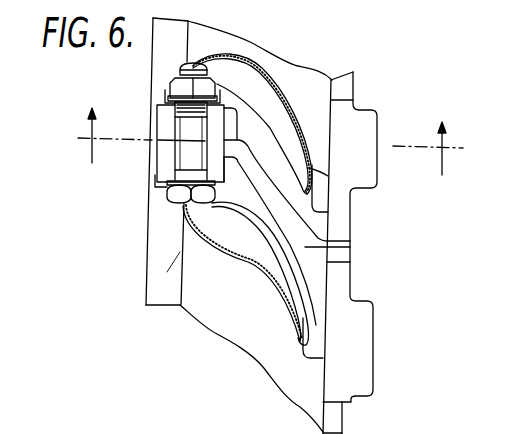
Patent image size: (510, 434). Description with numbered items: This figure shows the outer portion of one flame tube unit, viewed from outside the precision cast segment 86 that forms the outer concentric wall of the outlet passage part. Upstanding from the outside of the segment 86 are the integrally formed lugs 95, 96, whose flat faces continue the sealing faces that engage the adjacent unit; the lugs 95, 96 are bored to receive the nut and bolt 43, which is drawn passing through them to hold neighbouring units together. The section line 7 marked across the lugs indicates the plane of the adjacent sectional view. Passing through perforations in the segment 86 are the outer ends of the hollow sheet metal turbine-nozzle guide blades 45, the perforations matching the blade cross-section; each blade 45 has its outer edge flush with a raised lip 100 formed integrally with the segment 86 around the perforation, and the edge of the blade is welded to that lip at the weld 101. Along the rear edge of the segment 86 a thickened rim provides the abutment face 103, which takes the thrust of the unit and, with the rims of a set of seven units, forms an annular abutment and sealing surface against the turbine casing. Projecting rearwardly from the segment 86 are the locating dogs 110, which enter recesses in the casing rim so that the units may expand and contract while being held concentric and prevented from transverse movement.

The section line 7- 7 is at (270, 158).
The nut and bolt 43 is at (167, 193).
The turbine-nozzle guide blade 45 is at (292, 284).
The segment 86 is at (297, 86).
The lug 95 is at (158, 125).
The lug 96 is at (157, 155).
The raised lip 100 is at (282, 248).
The weld 101 is at (290, 266).
The abutment face 103 is at (343, 298).
The locating dog 110 is at (365, 172).